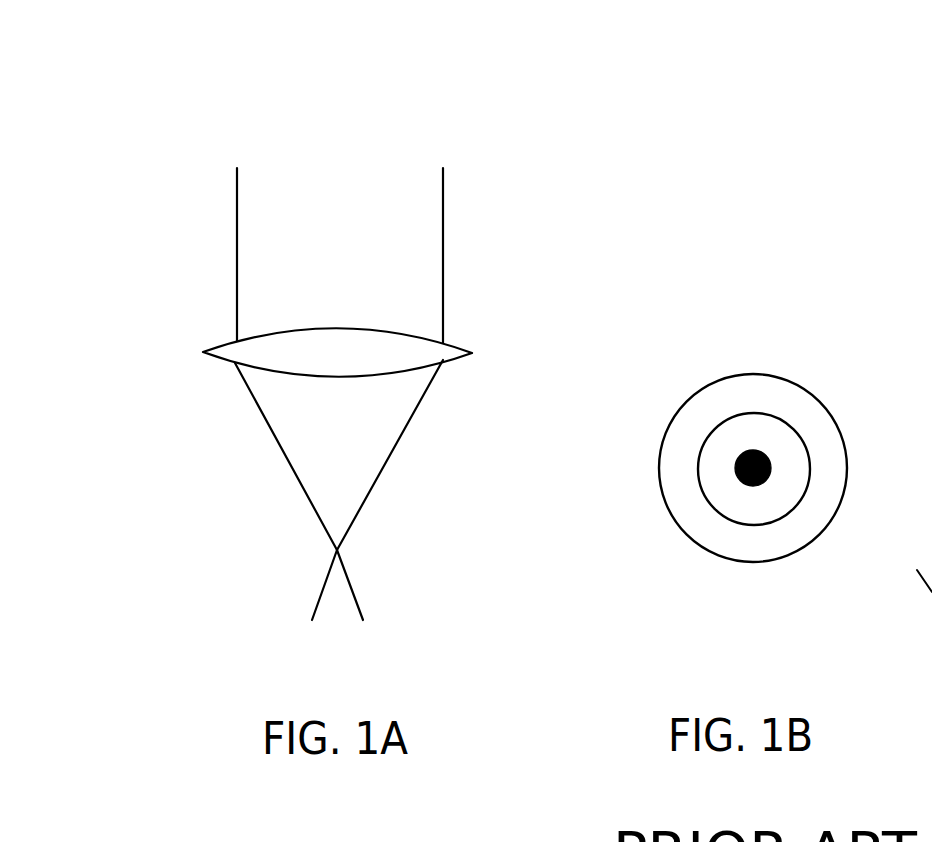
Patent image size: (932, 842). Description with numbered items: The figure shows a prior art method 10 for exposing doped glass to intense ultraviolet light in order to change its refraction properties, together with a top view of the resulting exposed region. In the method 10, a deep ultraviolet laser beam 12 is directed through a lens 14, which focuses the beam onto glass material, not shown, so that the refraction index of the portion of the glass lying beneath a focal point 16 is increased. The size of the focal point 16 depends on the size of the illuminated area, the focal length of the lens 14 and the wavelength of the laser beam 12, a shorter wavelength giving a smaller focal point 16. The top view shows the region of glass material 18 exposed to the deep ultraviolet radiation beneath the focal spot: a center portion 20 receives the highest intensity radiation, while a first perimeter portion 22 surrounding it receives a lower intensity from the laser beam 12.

In FIG. 1A, the prior art method for focusing a deep ultraviolet laser beam 10 is at (518, 169).
In FIG. 1A, the deep ultraviolet laser beam 12 is at (380, 267).
In FIG. 1A, the lens 14 is at (228, 356).
In FIG. 1A, the focal point 16 is at (340, 553).
In FIG. 1B, the region of glass material exposed to deep ultraviolet radiation 18 is at (811, 266).
In FIG. 1B, the center portion 20 is at (765, 452).
In FIG. 1B, the first perimeter portion 22 is at (698, 477).